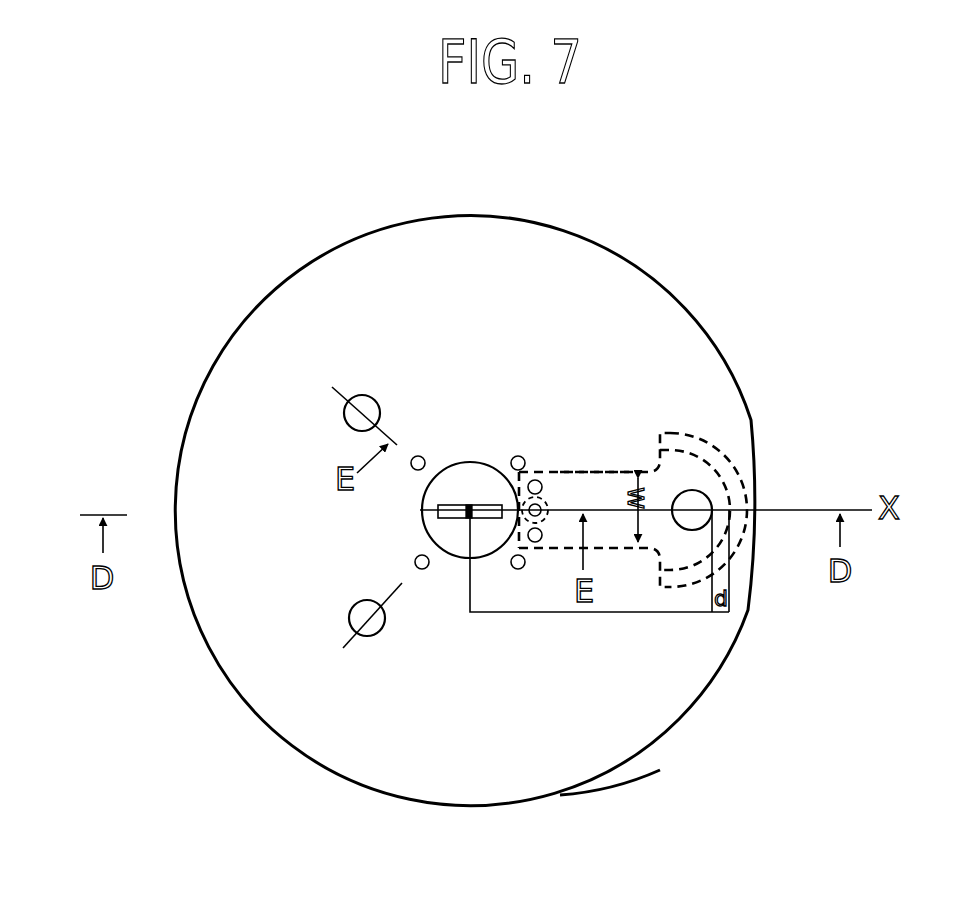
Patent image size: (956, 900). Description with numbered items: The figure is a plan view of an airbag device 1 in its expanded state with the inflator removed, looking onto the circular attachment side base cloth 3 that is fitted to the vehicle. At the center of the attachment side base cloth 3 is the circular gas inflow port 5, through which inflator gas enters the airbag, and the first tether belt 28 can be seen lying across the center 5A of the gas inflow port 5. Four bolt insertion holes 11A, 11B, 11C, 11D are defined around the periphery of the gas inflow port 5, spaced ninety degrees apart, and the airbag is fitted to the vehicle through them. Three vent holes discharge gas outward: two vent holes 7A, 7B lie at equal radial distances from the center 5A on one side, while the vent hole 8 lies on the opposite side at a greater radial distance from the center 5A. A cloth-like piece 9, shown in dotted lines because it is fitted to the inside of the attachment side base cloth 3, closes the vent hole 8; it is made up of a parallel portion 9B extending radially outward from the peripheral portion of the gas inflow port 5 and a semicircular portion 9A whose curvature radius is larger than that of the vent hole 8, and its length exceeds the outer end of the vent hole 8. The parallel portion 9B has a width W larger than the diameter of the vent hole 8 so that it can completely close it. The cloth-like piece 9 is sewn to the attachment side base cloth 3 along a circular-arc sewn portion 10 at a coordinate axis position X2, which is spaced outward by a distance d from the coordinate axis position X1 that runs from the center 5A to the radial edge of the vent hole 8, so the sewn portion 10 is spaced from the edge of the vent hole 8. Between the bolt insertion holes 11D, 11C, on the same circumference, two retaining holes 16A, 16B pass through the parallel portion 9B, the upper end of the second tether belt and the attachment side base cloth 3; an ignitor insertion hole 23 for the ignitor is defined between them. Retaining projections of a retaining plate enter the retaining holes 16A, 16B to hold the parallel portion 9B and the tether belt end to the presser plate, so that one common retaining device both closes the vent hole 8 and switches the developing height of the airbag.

The airbag device 1 is at (525, 210).
The attachment side base cloth 3 is at (587, 773).
The gas inflow port 5 is at (453, 470).
The center of the gas inflow port 5A is at (472, 503).
The vent hole 7A is at (364, 395).
The vent hole 7B is at (370, 636).
The vent hole 8 is at (690, 524).
The cloth-like piece 9 is at (615, 550).
The semicircular portion 9A is at (670, 432).
The parallel portion 9B is at (623, 470).
The sewn portion 10 is at (712, 456).
The bolt insertion hole 11A is at (418, 456).
The bolt insertion hole 11B is at (423, 569).
The bolt insertion hole 11C is at (519, 569).
The bolt insertion hole 11D is at (518, 456).
The retaining hole 16A is at (535, 480).
The retaining hole 16B is at (540, 542).
The ignitor insertion hole 23 is at (545, 505).
The first tether belt 28 is at (438, 511).
The coordinate axis position X1 is at (717, 613).
The coordinate axis position X2 is at (727, 613).